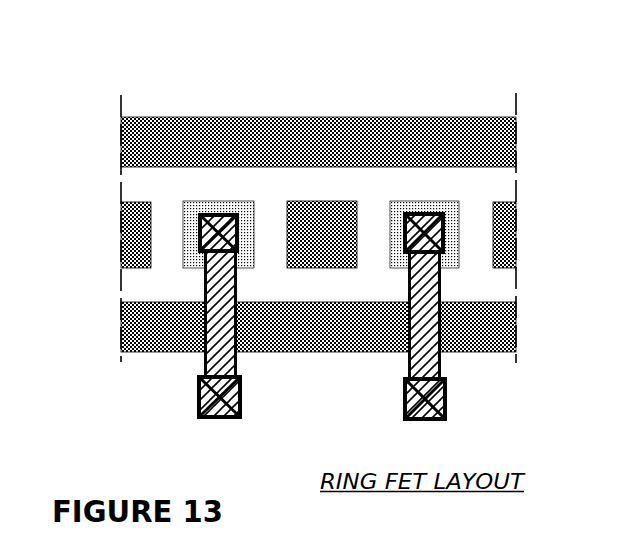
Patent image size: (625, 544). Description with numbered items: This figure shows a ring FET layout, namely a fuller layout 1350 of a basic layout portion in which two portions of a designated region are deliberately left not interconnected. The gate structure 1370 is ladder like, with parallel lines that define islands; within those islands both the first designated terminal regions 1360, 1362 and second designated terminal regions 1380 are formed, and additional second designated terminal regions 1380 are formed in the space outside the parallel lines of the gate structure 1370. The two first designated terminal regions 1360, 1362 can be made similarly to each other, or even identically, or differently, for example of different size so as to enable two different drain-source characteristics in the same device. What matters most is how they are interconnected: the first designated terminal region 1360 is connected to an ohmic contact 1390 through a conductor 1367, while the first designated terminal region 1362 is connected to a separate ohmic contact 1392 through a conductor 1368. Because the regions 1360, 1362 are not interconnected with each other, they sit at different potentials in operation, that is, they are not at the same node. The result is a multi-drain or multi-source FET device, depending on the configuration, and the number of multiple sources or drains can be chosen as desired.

The fuller layout 1350 is at (88, 60).
The first designated terminal region 1360 is at (202, 202).
The first designated terminal region 1362 is at (405, 202).
The conductor 1367 is at (235, 364).
The conductor 1368 is at (439, 369).
The gate structure 1370 is at (122, 285).
The second designated terminal regions 1380 is at (190, 117).
The ohmic contact 1390 is at (198, 399).
The ohmic contact 1392 is at (404, 399).